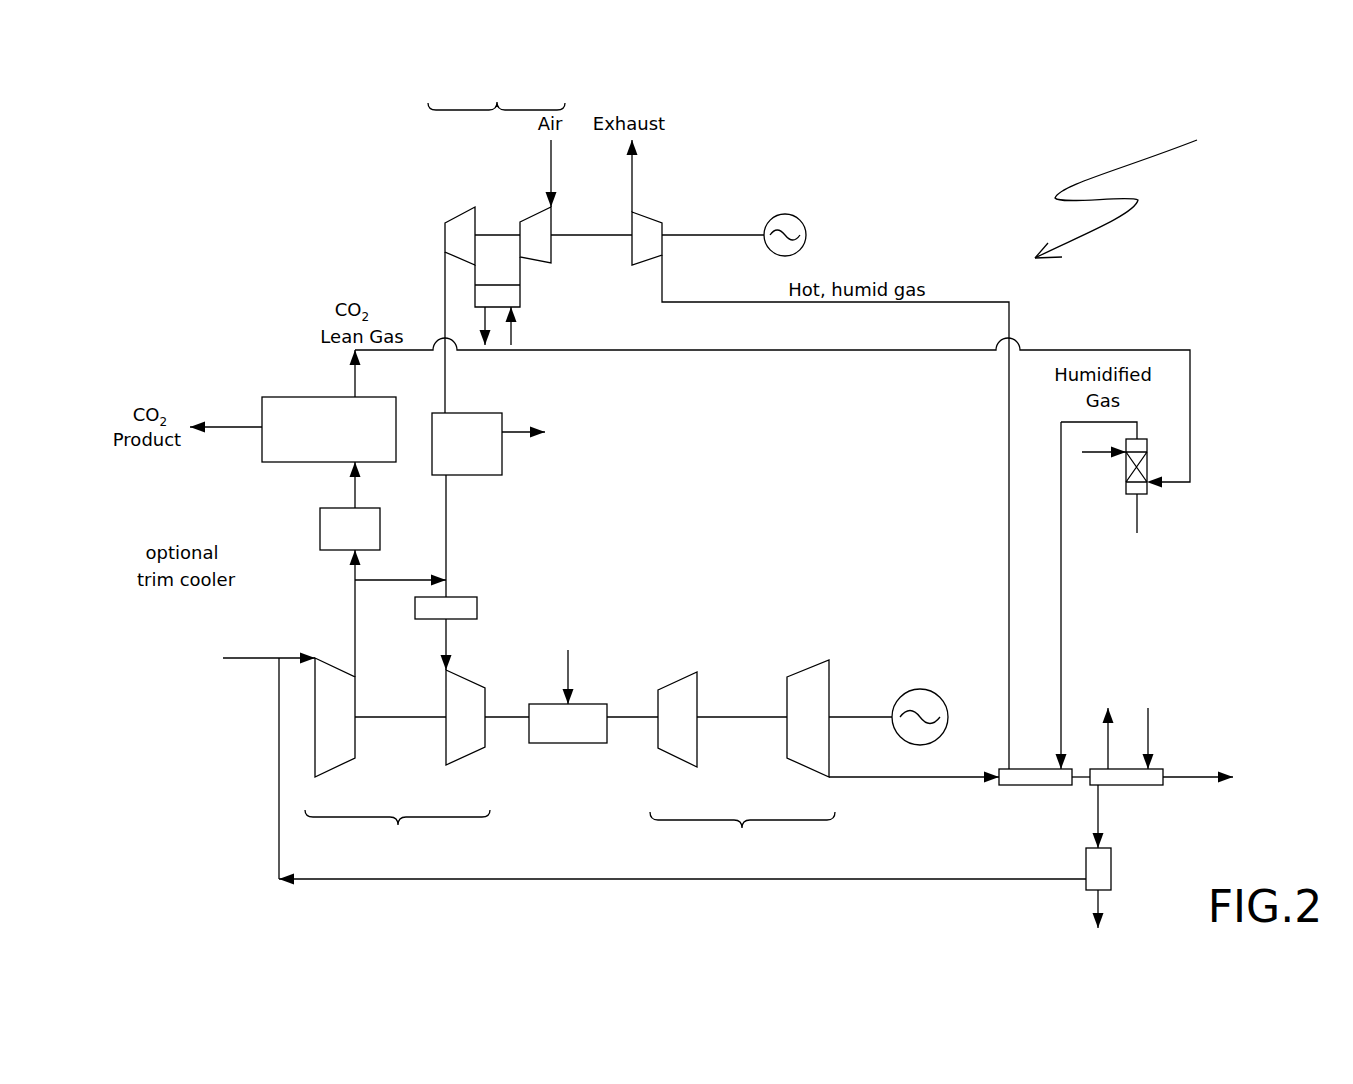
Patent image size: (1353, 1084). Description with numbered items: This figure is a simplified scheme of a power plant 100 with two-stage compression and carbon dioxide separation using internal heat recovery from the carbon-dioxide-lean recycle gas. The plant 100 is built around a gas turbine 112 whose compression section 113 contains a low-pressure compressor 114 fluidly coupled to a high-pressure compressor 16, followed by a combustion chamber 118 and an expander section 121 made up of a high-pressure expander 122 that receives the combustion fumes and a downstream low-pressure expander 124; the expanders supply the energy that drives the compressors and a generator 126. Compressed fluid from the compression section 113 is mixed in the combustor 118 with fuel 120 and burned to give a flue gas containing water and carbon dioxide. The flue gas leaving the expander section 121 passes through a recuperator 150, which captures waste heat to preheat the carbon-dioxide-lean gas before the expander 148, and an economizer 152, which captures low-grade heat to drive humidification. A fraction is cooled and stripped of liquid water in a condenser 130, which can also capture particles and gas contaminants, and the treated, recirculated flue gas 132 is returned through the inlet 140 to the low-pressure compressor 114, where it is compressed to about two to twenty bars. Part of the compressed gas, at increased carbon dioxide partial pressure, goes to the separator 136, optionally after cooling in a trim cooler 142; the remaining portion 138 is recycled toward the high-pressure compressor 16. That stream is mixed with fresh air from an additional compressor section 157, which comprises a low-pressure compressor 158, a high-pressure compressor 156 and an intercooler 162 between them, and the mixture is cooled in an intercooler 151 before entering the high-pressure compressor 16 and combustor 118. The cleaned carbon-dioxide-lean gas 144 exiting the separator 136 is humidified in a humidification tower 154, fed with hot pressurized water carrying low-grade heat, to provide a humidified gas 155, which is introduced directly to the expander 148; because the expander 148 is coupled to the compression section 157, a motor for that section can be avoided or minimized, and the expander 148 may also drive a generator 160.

The power plant 100 is at (1132, 187).
The gas turbine 112 is at (600, 542).
The compression section 113 is at (397, 830).
The low-pressure compressor 114 is at (355, 742).
The high-pressure compressor 16 is at (466, 757).
The combustion chamber 118 is at (593, 685).
The fuel 120 is at (592, 632).
The expander section 121 is at (742, 831).
The high-pressure expander 122 is at (681, 668).
The low-pressure expander 124 is at (808, 660).
The generator 126 is at (920, 690).
The condenser 130 is at (1111, 865).
The recirculated flue gas 132 is at (925, 879).
The CO2 separator 136 is at (290, 397).
The remaining flue gas portion 138 is at (392, 582).
The inlet air line 140 is at (258, 660).
The trim cooler 142 is at (318, 528).
The CO2 lean gas 144 is at (355, 385).
The expander 148 is at (648, 213).
The recuperator 150 is at (1030, 785).
The cooler 151 is at (477, 608).
The economizer 152 is at (1127, 785).
The humidification tower 154 is at (1137, 515).
The humidified gas 155 is at (826, 305).
The high-pressure compressor 156 is at (450, 212).
The additional compressor section 157 is at (496, 93).
The low-pressure compressor 158 is at (527, 215).
The generator 160 is at (806, 235).
The intercooler 162 is at (520, 297).